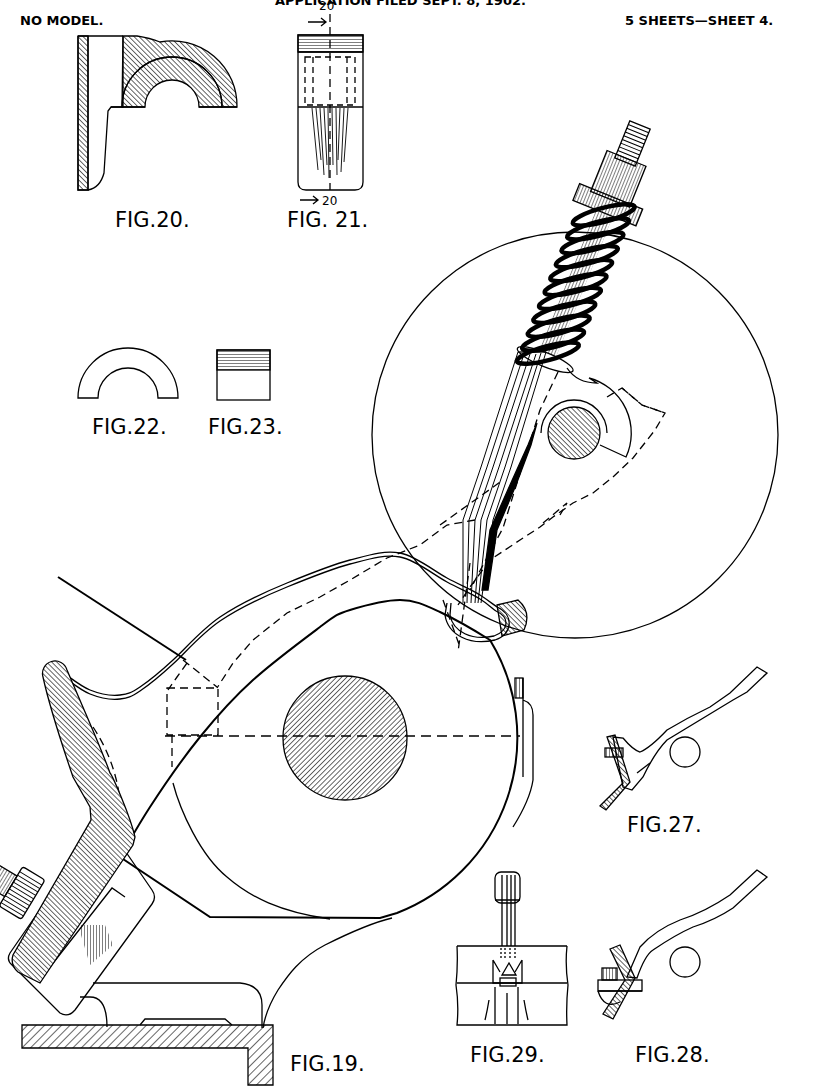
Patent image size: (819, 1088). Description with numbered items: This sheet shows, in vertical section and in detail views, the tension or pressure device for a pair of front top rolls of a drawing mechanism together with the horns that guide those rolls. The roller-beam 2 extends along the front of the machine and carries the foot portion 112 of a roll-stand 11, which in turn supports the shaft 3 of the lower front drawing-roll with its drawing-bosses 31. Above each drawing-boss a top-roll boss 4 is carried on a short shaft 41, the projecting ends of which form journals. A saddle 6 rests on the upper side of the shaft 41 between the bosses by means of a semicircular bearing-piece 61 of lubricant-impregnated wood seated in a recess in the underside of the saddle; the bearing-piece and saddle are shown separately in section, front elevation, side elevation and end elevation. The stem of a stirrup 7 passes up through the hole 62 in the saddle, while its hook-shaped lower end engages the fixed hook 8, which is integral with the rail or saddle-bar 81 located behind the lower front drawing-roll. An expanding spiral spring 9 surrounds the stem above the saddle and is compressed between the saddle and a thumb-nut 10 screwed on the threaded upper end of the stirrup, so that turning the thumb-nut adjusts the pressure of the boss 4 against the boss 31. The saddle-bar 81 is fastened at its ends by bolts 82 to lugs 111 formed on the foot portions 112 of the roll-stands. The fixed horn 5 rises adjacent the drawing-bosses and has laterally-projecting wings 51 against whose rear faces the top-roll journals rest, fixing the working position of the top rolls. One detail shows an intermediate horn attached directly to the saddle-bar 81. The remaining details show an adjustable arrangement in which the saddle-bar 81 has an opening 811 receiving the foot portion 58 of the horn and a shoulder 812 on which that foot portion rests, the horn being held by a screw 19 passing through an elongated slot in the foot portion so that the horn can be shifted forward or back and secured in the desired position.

In FIG. 19, the roller-beam 2 is at (275, 1045).
In FIG. 19, the shaft of the lower front drawing-roll 3 is at (387, 782).
In FIG. 19, the drawing-bosses 31 is at (510, 665).
In FIG. 19, the bosses of the front top rolls 4 is at (680, 614).
In FIG. 19, the short shaft 41 is at (547, 437).
In FIG. 19, the horn 5 is at (653, 432).
In FIG. 27, the horn 5 is at (755, 688).
In FIG. 28, the horn 5 is at (735, 907).
In FIG. 29, the horn 5 is at (521, 878).
In FIG. 19, the wings 51 is at (658, 412).
In FIG. 28, the foot portion of the horn 58 is at (643, 983).
In FIG. 20, the saddle 6 is at (230, 72).
In FIG. 21, the saddle 6 is at (363, 66).
In FIG. 19, the saddle 6 is at (603, 392).
In FIG. 20, the semicircular bearing-piece 61 is at (210, 110).
In FIG. 22, the semicircular bearing-piece 61 is at (154, 360).
In FIG. 23, the semicircular bearing-piece 61 is at (258, 351).
In FIG. 19, the semicircular bearing-piece 61 is at (600, 448).
In FIG. 20, the hole in the saddle 62 is at (100, 47).
In FIG. 19, the stirrup 7 is at (480, 488).
In FIG. 19, the hook 8 is at (240, 603).
In FIG. 19, the rail or saddle-bar 81 is at (82, 786).
In FIG. 27, the rail or saddle-bar 81 is at (610, 787).
In FIG. 28, the rail or saddle-bar 81 is at (616, 1015).
In FIG. 29, the rail or saddle-bar 81 is at (470, 1008).
In FIG. 29, the opening 811 is at (497, 962).
In FIG. 28, the shoulder 812 is at (605, 993).
In FIG. 29, the shoulder 812 is at (503, 1000).
In FIG. 19, the bolts 82 is at (38, 870).
In FIG. 19, the expanding spiral spring 9 is at (548, 292).
In FIG. 19, the thumb-nut 10 is at (641, 193).
In FIG. 19, the roll-stand 11 is at (70, 582).
In FIG. 19, the lugs 111 is at (138, 924).
In FIG. 19, the foot portions of the roll-stands 112 is at (240, 975).
In FIG. 28, the screw 19 is at (606, 968).
In FIG. 29, the screw 19 is at (516, 962).